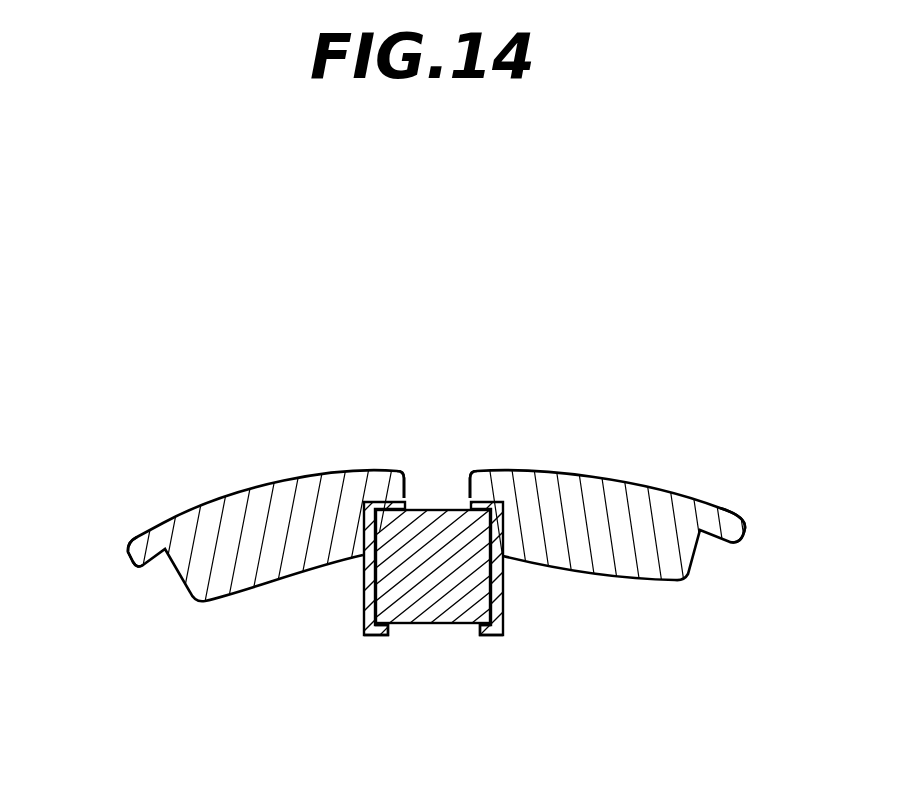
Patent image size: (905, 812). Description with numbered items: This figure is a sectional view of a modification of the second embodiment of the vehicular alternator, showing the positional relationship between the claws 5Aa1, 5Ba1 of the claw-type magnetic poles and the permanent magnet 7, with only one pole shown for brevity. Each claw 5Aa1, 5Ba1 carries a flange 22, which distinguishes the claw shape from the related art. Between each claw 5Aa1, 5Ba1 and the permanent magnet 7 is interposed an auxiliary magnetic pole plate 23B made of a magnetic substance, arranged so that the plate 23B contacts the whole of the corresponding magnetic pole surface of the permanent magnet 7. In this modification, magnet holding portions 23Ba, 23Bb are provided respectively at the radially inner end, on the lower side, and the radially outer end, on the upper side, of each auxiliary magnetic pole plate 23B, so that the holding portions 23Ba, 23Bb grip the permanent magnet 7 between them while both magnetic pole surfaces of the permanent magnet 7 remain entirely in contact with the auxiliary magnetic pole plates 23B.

The claw 5Aa1 is at (266, 439).
The claw 5Ba1 is at (612, 440).
The flange 22 is at (439, 405).
The magnet holding portion 23Bb is at (450, 388).
The auxiliary magnetic pole plate 23B is at (411, 590).
The magnet holding portion 23Ba is at (466, 710).
The permanent magnet 7 is at (440, 612).